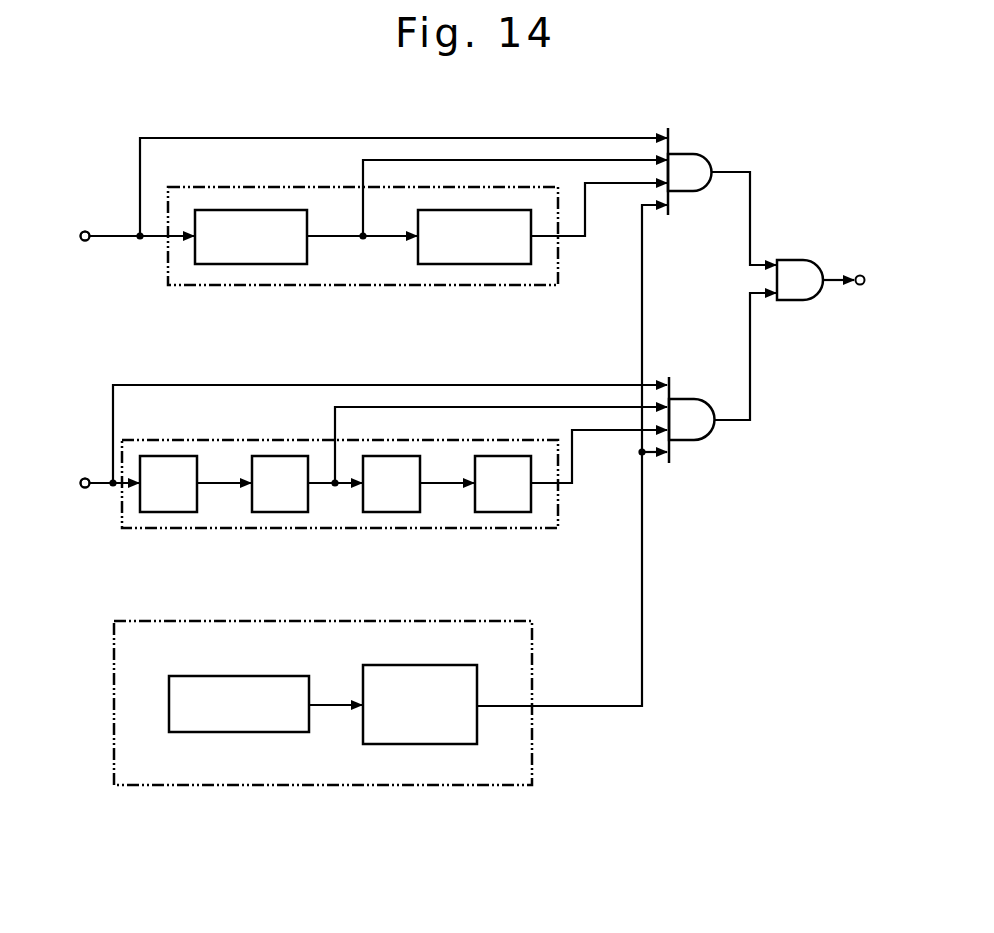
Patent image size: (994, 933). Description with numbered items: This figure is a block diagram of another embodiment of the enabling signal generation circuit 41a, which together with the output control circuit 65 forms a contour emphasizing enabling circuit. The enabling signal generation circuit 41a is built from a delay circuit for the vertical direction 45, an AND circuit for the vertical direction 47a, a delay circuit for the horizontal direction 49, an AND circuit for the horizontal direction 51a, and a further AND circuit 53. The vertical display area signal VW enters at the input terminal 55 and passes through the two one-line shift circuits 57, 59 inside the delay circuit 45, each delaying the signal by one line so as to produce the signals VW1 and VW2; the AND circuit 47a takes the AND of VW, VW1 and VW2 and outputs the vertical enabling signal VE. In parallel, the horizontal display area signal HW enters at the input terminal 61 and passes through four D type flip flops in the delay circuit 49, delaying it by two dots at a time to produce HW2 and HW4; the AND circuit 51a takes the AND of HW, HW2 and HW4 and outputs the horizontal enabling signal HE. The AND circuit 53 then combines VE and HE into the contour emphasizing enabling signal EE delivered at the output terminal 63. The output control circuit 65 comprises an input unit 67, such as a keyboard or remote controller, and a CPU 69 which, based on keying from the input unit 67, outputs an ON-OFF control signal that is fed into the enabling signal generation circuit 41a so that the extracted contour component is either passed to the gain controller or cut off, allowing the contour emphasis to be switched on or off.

The enabling signal generation circuit 41a is at (672, 514).
The delay circuit for the vertical direction 45 is at (183, 288).
The AND circuit for the vertical direction 47a is at (695, 162).
The delay circuit for the horizontal direction 49 is at (158, 530).
The AND circuit for the horizontal direction 51a is at (697, 412).
The AND circuit 53 is at (795, 272).
The input terminal 55 is at (87, 230).
The 1H shift circuit 57 is at (265, 256).
The 1H shift circuit 59 is at (473, 260).
The input terminal 61 is at (87, 478).
The output terminal 63 is at (862, 272).
The output control circuit 65 is at (535, 772).
The input unit 67 is at (245, 685).
The CPU 69 is at (430, 672).